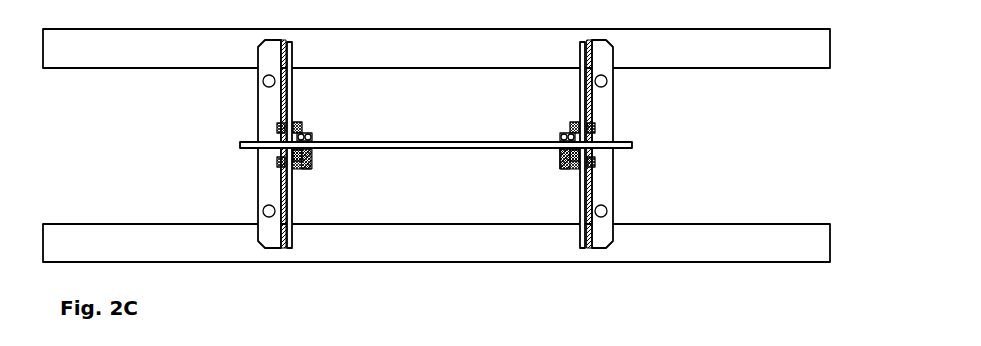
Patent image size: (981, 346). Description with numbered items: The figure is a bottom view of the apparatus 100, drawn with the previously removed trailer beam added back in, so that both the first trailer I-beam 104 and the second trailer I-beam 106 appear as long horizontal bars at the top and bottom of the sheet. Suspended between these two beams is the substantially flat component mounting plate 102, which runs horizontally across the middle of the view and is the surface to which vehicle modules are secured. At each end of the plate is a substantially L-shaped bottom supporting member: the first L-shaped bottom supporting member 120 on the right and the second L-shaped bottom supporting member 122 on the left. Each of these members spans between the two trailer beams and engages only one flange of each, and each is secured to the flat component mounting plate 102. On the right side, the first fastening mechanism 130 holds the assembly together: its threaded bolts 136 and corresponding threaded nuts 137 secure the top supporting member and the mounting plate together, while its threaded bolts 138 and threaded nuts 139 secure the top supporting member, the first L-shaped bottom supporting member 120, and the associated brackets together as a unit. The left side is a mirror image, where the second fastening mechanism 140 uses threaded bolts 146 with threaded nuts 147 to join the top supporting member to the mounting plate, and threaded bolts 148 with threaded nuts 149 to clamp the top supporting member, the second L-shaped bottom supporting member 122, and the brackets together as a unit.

The apparatus 100 is at (485, 157).
The flat component mounting plate 102 is at (436, 142).
The first trailer I-beam 104 is at (683, 29).
The second trailer I-beam 106 is at (773, 224).
The first L-shaped bottom supporting member 120 is at (613, 115).
The second L-shaped bottom supporting member 122 is at (258, 110).
The first fastening mechanism 130 is at (556, 153).
The threaded bolts 136 is at (555, 160).
The threaded nuts 137 is at (566, 134).
The threaded bolts 138 is at (607, 81).
The threaded nuts 139 is at (575, 127).
The second fastening mechanism 140 is at (316, 153).
The threaded bolts 146 is at (318, 160).
The threaded nuts 147 is at (306, 134).
The threaded bolts 148 is at (262, 81).
The threaded nuts 149 is at (297, 127).